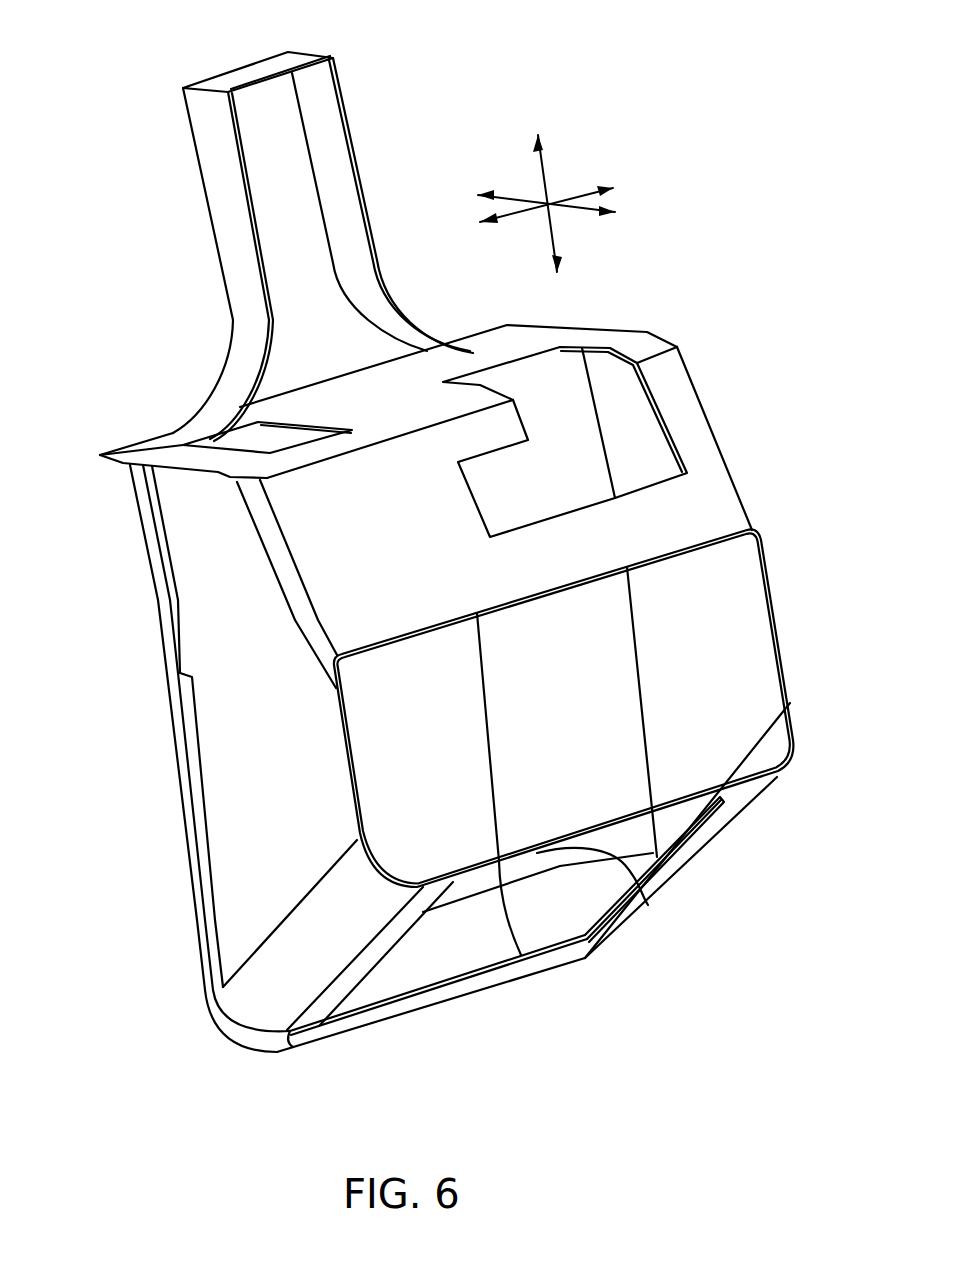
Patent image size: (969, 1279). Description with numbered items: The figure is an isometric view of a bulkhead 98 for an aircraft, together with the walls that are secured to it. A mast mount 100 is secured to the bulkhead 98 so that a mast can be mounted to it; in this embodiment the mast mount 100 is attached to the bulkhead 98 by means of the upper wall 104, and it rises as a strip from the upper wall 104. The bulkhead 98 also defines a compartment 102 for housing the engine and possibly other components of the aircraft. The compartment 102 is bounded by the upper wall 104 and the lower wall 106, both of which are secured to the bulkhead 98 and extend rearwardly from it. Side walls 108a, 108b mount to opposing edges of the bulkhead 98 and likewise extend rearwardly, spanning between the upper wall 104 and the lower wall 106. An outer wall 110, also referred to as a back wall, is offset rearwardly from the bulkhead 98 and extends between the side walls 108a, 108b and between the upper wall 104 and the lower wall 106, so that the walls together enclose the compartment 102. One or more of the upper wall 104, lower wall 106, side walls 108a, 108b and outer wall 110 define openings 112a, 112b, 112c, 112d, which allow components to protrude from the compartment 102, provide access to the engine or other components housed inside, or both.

The bulkhead 98 is at (437, 739).
The mast mount 100 is at (232, 232).
The compartment 102 is at (465, 949).
The upper wall 104 is at (388, 408).
The lower wall 106 is at (405, 1003).
The side wall 108a is at (295, 741).
The side wall 108b is at (605, 694).
The outer wall 110 is at (428, 539).
The opening 112a is at (219, 450).
The opening 112b is at (670, 422).
The opening 112c is at (755, 613).
The opening 112d is at (617, 900).